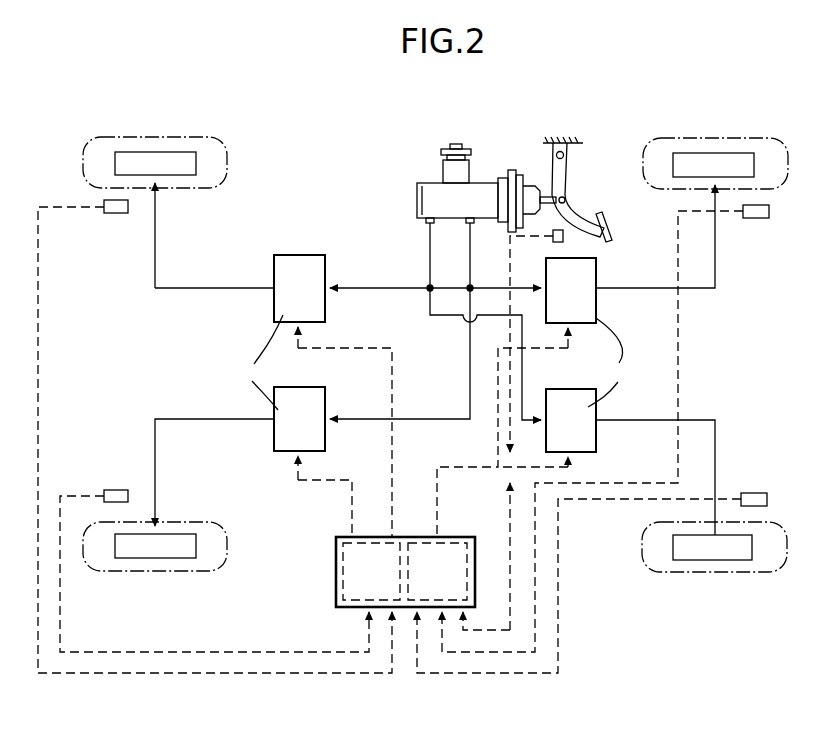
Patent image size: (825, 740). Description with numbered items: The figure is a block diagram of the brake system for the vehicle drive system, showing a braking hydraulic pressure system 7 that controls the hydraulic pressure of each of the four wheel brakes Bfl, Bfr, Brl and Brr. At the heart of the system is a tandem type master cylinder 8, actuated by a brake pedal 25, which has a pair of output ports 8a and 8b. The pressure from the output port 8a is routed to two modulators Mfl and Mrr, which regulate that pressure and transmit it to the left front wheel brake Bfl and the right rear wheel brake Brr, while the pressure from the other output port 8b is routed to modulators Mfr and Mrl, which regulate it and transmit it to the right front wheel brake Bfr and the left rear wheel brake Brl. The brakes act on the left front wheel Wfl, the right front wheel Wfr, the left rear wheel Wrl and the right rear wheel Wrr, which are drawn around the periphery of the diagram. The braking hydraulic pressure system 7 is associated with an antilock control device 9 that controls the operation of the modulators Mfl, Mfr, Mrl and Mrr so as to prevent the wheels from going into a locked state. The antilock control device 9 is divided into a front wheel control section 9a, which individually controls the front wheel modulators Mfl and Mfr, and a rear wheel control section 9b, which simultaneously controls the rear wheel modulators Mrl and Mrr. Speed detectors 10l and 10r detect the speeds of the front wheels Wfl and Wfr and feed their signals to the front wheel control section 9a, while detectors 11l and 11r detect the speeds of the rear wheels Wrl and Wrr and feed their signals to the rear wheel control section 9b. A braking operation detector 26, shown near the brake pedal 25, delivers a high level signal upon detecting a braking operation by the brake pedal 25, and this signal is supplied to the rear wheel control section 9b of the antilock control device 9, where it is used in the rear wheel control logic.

The braking hydraulic pressure system 7 is at (429, 360).
The tandem type master cylinder 8 is at (437, 188).
The output port 8a is at (471, 222).
The output port 8b is at (427, 221).
The antilock control device 9 is at (387, 555).
The front wheel control section 9a is at (345, 589).
The rear wheel control section 9b is at (420, 546).
The detector 10r is at (116, 214).
The detector 10l is at (116, 490).
The detector 11r is at (752, 219).
The detector 11l is at (752, 493).
The brake pedal 25 is at (609, 233).
The braking operation detector 26 is at (553, 241).
The modulator Mfr is at (295, 261).
The modulator Mfl is at (289, 398).
The modulator Mrr is at (596, 273).
The modulator Mrl is at (588, 405).
The right front wheel Wfr is at (117, 137).
The left front wheel Wfl is at (112, 572).
The right rear wheel Wrr is at (677, 138).
The left rear wheel Wrl is at (680, 575).
The right front wheel brake Bfr is at (178, 156).
The left front wheel brake Bfl is at (178, 553).
The right rear wheel brake Brr is at (738, 158).
The left rear wheel brake Brl is at (732, 555).